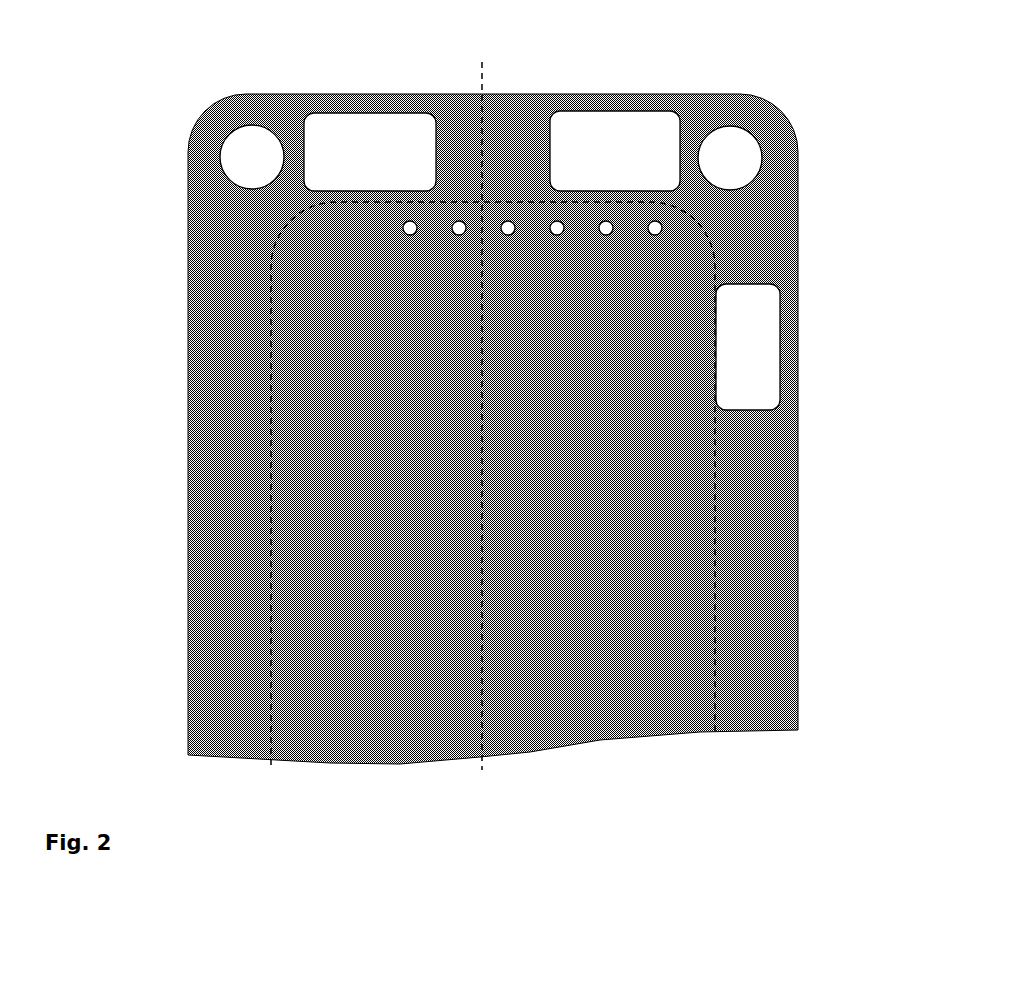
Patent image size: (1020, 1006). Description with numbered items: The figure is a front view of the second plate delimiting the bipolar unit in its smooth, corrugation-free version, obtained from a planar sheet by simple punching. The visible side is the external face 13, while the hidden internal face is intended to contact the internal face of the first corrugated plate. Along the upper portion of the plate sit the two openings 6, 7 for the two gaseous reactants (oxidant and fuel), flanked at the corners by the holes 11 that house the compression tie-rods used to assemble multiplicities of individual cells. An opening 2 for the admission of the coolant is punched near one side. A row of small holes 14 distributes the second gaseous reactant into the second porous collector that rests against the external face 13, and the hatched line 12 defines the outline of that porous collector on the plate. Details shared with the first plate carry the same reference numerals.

The opening for the admission of the coolant 2 is at (752, 364).
The opening for a gaseous reactant 6 is at (602, 124).
The opening for a gaseous reactant 7 is at (384, 125).
The holes for housing the compression tie-rods 11 is at (250, 154).
The hatched line defining the outline of the porous collector 12 is at (718, 509).
The external face 13 is at (766, 241).
The holes for distributing the second gaseous reactant 14 is at (668, 222).